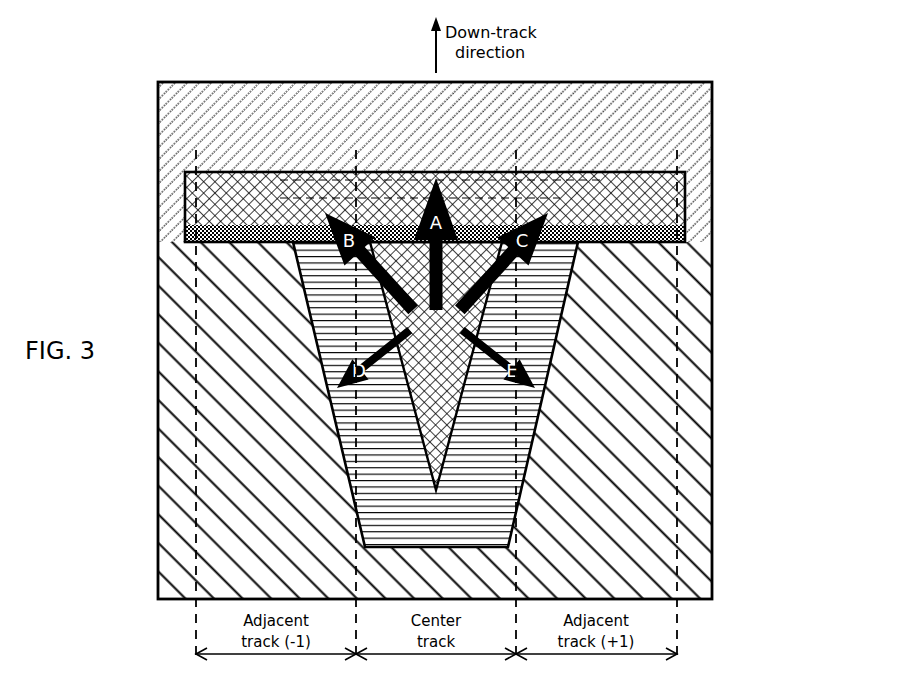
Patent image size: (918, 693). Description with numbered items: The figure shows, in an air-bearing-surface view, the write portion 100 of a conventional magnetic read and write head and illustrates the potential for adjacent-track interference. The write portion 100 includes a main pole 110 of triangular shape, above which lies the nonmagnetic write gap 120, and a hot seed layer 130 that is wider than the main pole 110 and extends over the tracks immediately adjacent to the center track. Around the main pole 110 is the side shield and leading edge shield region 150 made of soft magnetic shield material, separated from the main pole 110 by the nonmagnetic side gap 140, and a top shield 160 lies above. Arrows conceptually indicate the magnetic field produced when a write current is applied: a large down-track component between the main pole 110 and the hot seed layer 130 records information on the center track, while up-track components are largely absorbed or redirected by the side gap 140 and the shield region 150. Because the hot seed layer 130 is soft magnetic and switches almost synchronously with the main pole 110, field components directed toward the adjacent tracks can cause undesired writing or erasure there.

The write portion 100 is at (790, 158).
The main pole 110 is at (423, 382).
The write gap 120 is at (272, 244).
The hot seed layer 130 is at (217, 203).
The side gap 140 is at (423, 525).
The side shield and leading edge shield region 150 is at (423, 588).
The top shield 160 is at (423, 133).